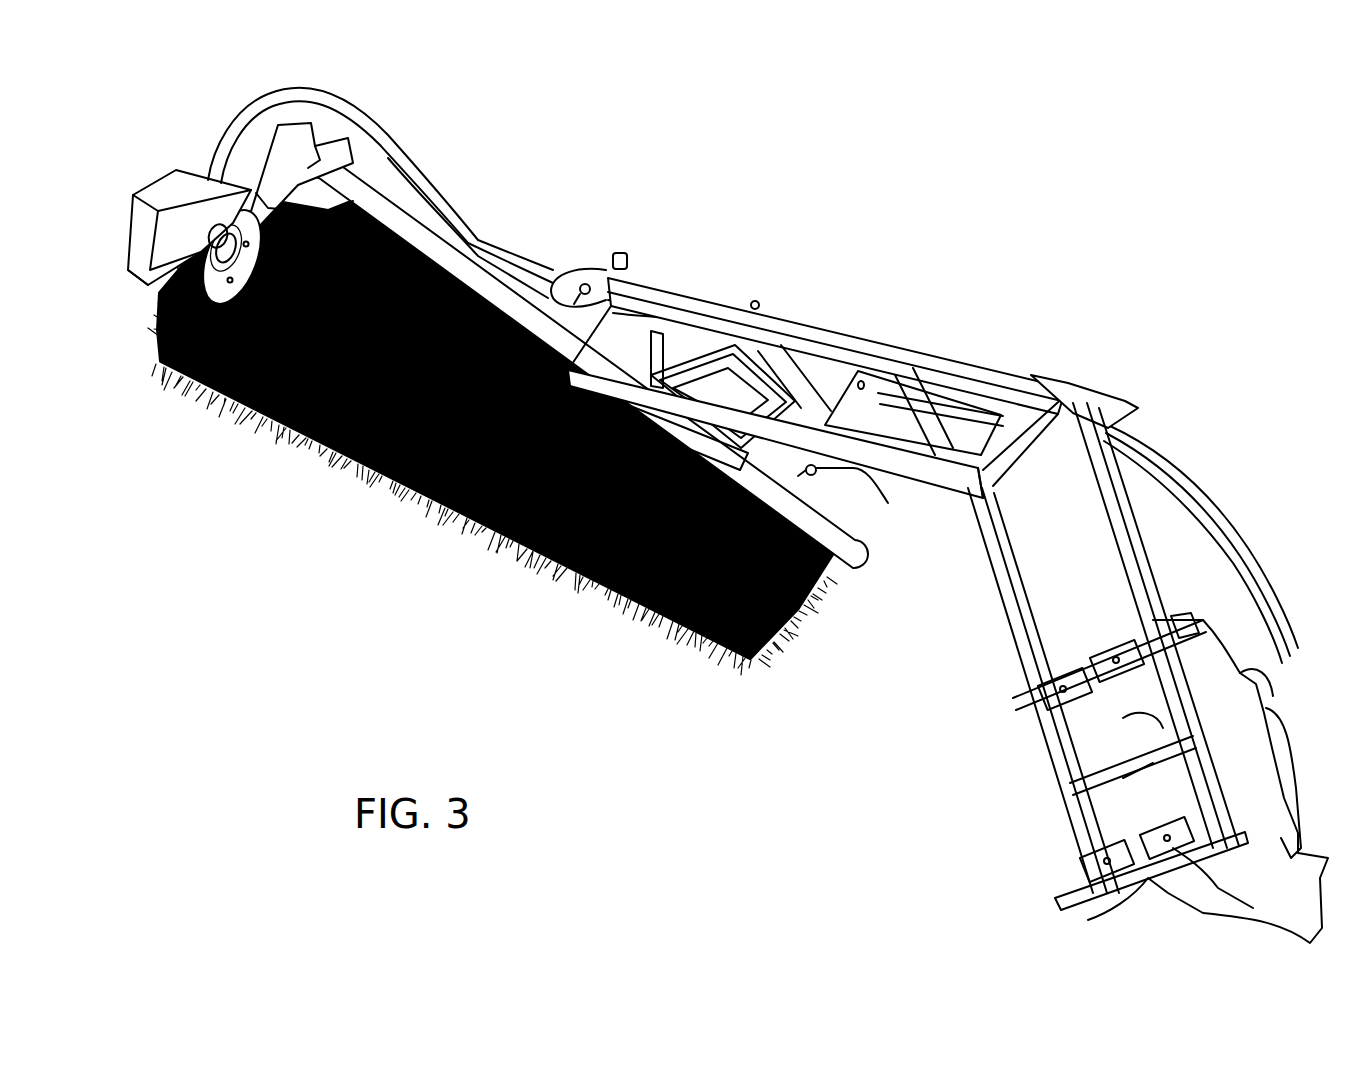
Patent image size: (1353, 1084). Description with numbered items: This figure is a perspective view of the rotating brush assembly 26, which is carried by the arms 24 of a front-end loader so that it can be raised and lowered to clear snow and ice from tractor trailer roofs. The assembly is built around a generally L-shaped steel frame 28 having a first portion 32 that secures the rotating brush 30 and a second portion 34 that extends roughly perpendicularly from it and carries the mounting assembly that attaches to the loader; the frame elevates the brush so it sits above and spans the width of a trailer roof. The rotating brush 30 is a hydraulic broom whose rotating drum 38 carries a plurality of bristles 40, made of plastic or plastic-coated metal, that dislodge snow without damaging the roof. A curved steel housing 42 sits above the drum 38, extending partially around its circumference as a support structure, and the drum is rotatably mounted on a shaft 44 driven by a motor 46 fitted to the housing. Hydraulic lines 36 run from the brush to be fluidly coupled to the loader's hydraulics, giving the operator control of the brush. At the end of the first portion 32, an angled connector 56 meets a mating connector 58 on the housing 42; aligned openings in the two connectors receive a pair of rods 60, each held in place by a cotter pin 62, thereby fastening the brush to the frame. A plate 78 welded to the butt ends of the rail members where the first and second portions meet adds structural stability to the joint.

The arm 24 is at (1300, 782).
The rotating brush assembly 26 is at (498, 572).
The frame 28 is at (958, 352).
The rotating brush 30 is at (277, 427).
The first portion 32 is at (850, 338).
The second portion 34 is at (992, 613).
The hydraulic lines 36 is at (343, 128).
The rotating drum 38 is at (162, 360).
The bristles 40 is at (402, 492).
The housing 42 is at (857, 546).
The shaft 44 is at (160, 289).
The motor 46 is at (118, 218).
The connector 56 is at (690, 330).
The mating connector 58 is at (582, 267).
The rod 60 is at (576, 278).
The cotter pin 62 is at (620, 303).
The plate 78 is at (1100, 380).